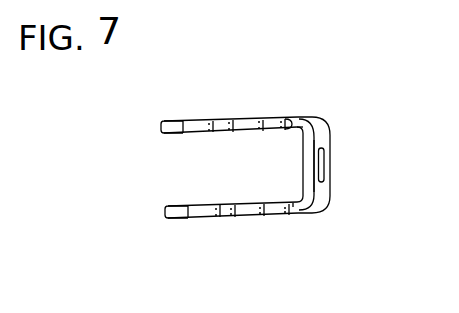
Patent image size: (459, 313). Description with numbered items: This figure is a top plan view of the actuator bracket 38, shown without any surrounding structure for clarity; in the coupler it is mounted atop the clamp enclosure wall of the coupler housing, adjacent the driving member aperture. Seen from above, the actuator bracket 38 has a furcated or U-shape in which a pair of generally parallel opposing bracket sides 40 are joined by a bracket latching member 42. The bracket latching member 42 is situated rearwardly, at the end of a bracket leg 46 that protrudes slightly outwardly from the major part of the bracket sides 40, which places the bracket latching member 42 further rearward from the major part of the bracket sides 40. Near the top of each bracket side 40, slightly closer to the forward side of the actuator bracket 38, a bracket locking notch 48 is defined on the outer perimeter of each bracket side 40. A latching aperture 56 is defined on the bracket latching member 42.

The actuator bracket 38 is at (321, 206).
The bracket sides 40 is at (174, 120).
The bracket latching member 42 is at (323, 138).
The bracket leg 46 is at (299, 128).
The bracket locking notch 48 is at (213, 120).
The latching aperture 56 is at (326, 160).